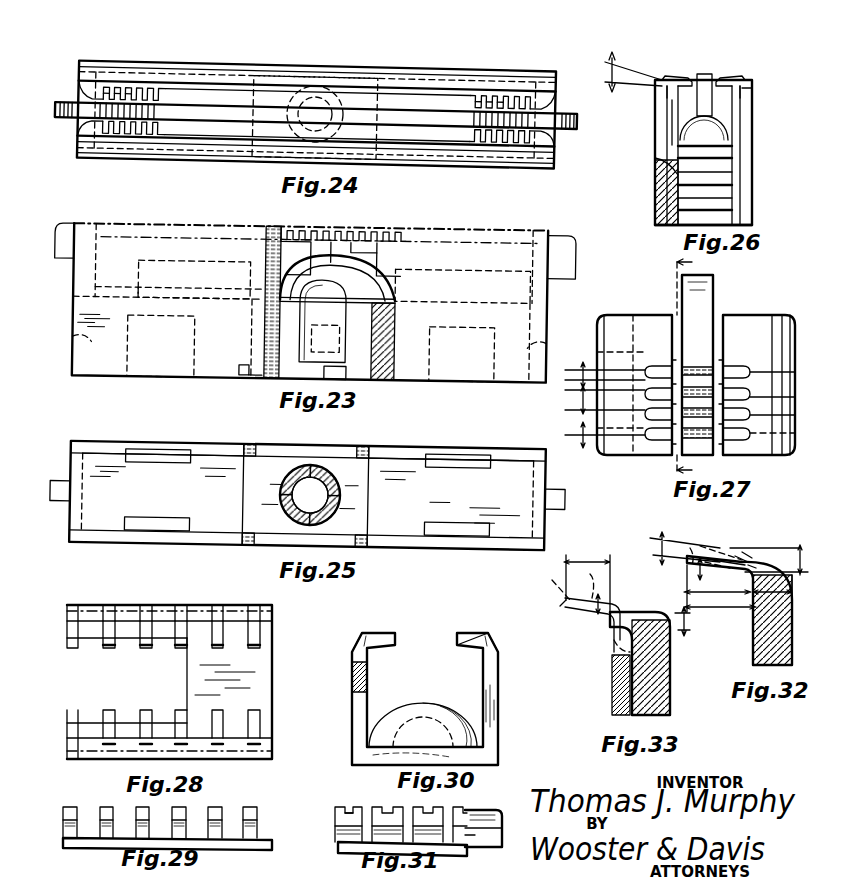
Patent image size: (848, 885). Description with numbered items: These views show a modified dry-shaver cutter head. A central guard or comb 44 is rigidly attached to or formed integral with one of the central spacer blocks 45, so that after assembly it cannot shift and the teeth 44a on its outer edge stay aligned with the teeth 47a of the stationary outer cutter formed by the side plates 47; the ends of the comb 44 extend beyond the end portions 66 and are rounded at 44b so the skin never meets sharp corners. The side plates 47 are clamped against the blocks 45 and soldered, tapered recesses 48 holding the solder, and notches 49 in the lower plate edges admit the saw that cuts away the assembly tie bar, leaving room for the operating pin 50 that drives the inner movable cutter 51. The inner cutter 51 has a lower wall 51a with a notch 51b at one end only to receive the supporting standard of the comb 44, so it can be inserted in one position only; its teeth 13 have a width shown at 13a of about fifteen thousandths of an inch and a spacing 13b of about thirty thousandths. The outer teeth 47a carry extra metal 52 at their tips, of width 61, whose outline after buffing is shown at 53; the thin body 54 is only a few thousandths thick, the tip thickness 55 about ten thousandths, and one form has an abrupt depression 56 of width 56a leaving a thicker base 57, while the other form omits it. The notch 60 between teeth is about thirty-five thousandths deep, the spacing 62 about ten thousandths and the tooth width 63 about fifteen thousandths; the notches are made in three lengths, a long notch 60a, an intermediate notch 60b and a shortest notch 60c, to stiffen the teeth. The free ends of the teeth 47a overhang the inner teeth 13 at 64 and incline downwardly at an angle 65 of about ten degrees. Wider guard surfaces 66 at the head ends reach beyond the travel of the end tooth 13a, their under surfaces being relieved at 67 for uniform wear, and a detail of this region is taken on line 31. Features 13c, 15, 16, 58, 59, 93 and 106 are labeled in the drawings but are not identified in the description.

In FIG. 26, the inner cutter teeth 13 is at (668, 80).
In FIG. 33, the inner cutter teeth 13 is at (588, 618).
In FIG. 28, the inner cutter teeth 13 is at (218, 650).
In FIG. 29, the inner cutter teeth 13 is at (215, 808).
In FIG. 30, the inner cutter teeth 13 is at (390, 632).
In FIG. 31, the inner cutter teeth 13 is at (340, 818).
In FIG. 28, the end tooth of inner cutter 13a is at (95, 671).
In FIG. 31, the end tooth of inner cutter 13a is at (470, 832).
In FIG. 26, the spacing between inner teeth 13b is at (756, 90).
In FIG. 33, the spacing between inner teeth 13b is at (622, 630).
In FIG. 28, the spacing between inner teeth 13b is at (180, 605).
In FIG. 30, the spacing between inner teeth 13b is at (357, 645).
In FIG. 30, the tab tip 13c is at (368, 632).
In FIG. 30, the channel side wall 15 is at (352, 688).
In FIG. 30, the channel wall 16 is at (358, 655).
In FIG. 27, the section line 31 is at (694, 367).
In FIG. 24, the central guard or comb 44 is at (425, 112).
In FIG. 26, the central guard or comb 44 is at (710, 78).
In FIG. 23, the central guard or comb 44 is at (272, 240).
In FIG. 27, the central guard or comb 44 is at (700, 335).
In FIG. 24, the guard teeth 44a is at (165, 104).
In FIG. 26, the guard teeth 44a is at (704, 128).
In FIG. 23, the guard teeth 44a is at (300, 228).
In FIG. 27, the guard teeth 44a is at (700, 372).
In FIG. 24, the rounded ends of guard 44b is at (60, 102).
In FIG. 23, the rounded ends of guard 44b is at (62, 226).
In FIG. 26, the central spacer blocks 45 is at (732, 152).
In FIG. 23, the central spacer blocks 45 is at (392, 345).
In FIG. 25, the central spacer blocks 45 is at (98, 520).
In FIG. 24, the side plates 47 is at (400, 64).
In FIG. 26, the side plates 47 is at (752, 165).
In FIG. 23, the side plates 47 is at (135, 381).
In FIG. 25, the side plates 47 is at (125, 445).
In FIG. 32, the side plates 47 is at (755, 645).
In FIG. 33, the side plates 47 is at (670, 675).
In FIG. 24, the stationary cutter teeth 47a is at (140, 90).
In FIG. 26, the stationary cutter teeth 47a is at (684, 80).
In FIG. 23, the stationary cutter teeth 47a is at (365, 238).
In FIG. 27, the stationary cutter teeth 47a is at (740, 390).
In FIG. 32, the stationary cutter teeth 47a is at (715, 563).
In FIG. 33, the stationary cutter teeth 47a is at (622, 610).
In FIG. 23, the tapered recesses 48 is at (172, 379).
In FIG. 25, the tapered recesses 48 is at (160, 466).
In FIG. 26, the saw notches 49 is at (667, 227).
In FIG. 25, the saw notches 49 is at (366, 452).
In FIG. 23, the operating pin 50 is at (268, 381).
In FIG. 25, the operating pin 50 is at (325, 475).
In FIG. 26, the inner movable cutter 51 is at (670, 128).
In FIG. 33, the inner movable cutter 51 is at (620, 688).
In FIG. 28, the inner movable cutter 51 is at (275, 668).
In FIG. 29, the inner movable cutter 51 is at (62, 843).
In FIG. 30, the inner movable cutter 51 is at (347, 718).
In FIG. 31, the inner movable cutter 51 is at (340, 846).
In FIG. 23, the lower wall of inner cutter 51a is at (362, 300).
In FIG. 28, the lower wall of inner cutter 51a is at (272, 705).
In FIG. 23, the notch in inner cutter 51b is at (162, 300).
In FIG. 28, the notch in inner cutter 51b is at (185, 690).
In FIG. 32, the extra tip metal 52 is at (722, 548).
In FIG. 33, the extra tip metal 52 is at (552, 580).
In FIG. 32, the finished tooth outline 53 is at (684, 570).
In FIG. 31, the finished tooth outline 53 is at (352, 808).
In FIG. 32, the tooth body 54 is at (718, 562).
In FIG. 33, the tooth body 54 is at (598, 597).
In FIG. 32, the tip thickness 55 is at (680, 540).
In FIG. 32, the depression 56 is at (748, 560).
In FIG. 32, the width of depression 56a is at (752, 556).
In FIG. 32, the tooth base 57 is at (772, 587).
In FIG. 32, the arm length 58 is at (712, 607).
In FIG. 32, the tooth corner 59 is at (755, 566).
In FIG. 27, the slot or notch between teeth 60 is at (750, 435).
In FIG. 32, the slot or notch between teeth 60 is at (718, 588).
In FIG. 33, the slot or notch between teeth 60 is at (587, 579).
In FIG. 24, the longer notch 60a is at (105, 90).
In FIG. 27, the longer notch 60a is at (752, 372).
In FIG. 24, the intermediate notch 60b is at (120, 90).
In FIG. 27, the intermediate notch 60b is at (752, 394).
In FIG. 24, the shortest notch 60c is at (128, 90).
In FIG. 27, the shortest notch 60c is at (660, 370).
In FIG. 32, the width of increased thickness 61 is at (690, 545).
In FIG. 33, the width of increased thickness 61 is at (600, 582).
In FIG. 27, the tooth spacing 62 is at (583, 435).
In FIG. 27, the tooth width 63 is at (583, 400).
In FIG. 33, the overhang 64 is at (566, 606).
In FIG. 26, the angle of inclination 65 is at (605, 70).
In FIG. 32, the angle of inclination 65 is at (772, 543).
In FIG. 33, the angle of inclination 65 is at (682, 629).
In FIG. 24, the guard and guide surfaces 66 is at (85, 128).
In FIG. 27, the guard and guide surfaces 66 is at (650, 330).
In FIG. 31, the guard and guide surfaces 66 is at (482, 812).
In FIG. 31, the relieved under surface 67 is at (502, 826).
In FIG. 23, the cavity 93 is at (319, 321).
In FIG. 30, the cavity 93 is at (438, 710).
In FIG. 23, the recess 106 is at (80, 345).